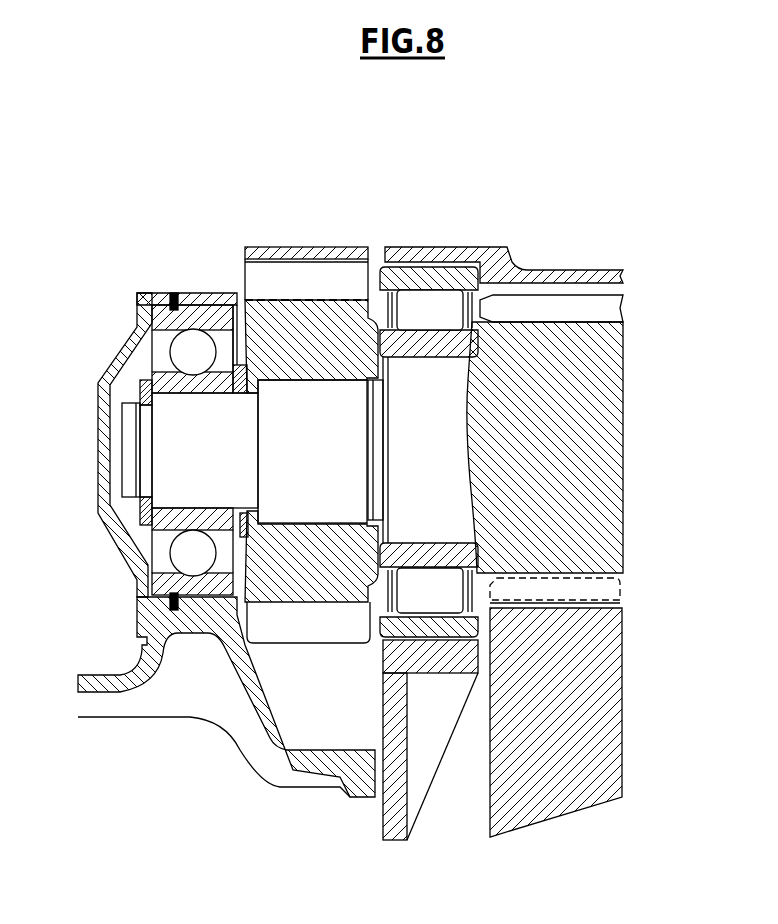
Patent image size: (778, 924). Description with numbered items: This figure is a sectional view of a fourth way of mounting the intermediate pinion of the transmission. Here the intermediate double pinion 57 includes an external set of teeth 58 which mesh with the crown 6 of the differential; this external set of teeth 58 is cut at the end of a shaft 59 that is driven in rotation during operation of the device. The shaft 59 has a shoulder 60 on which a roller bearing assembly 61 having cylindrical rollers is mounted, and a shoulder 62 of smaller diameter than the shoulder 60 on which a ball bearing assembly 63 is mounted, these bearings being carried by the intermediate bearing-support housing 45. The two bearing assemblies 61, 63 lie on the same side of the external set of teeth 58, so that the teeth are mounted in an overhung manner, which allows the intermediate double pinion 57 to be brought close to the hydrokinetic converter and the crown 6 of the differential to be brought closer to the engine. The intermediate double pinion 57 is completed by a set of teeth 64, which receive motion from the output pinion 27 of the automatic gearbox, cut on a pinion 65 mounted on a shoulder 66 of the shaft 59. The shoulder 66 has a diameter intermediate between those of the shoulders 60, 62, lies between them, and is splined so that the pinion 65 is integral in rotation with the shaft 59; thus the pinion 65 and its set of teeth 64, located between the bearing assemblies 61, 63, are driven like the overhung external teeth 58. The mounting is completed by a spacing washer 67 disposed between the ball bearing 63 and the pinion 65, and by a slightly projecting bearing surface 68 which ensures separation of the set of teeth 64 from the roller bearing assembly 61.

The crown of the differential 6 is at (570, 775).
The output pinion of the automatic gearbox 27 is at (327, 252).
The intermediate bearing-support housing 45 is at (115, 686).
The intermediate double pinion bearing 57 is at (441, 372).
The external set of teeth 58 is at (547, 313).
The shaft 59 is at (183, 427).
The shoulder 60 is at (410, 340).
The roller bearing assembly 61 is at (427, 277).
The shoulder 62 is at (188, 420).
The ball bearing assembly 63 is at (163, 320).
The set of teeth 64 is at (298, 280).
The pinion 65 is at (293, 338).
The shoulder 66 is at (277, 325).
The spacing washer 67 is at (238, 366).
The bearing surface 68 is at (380, 340).